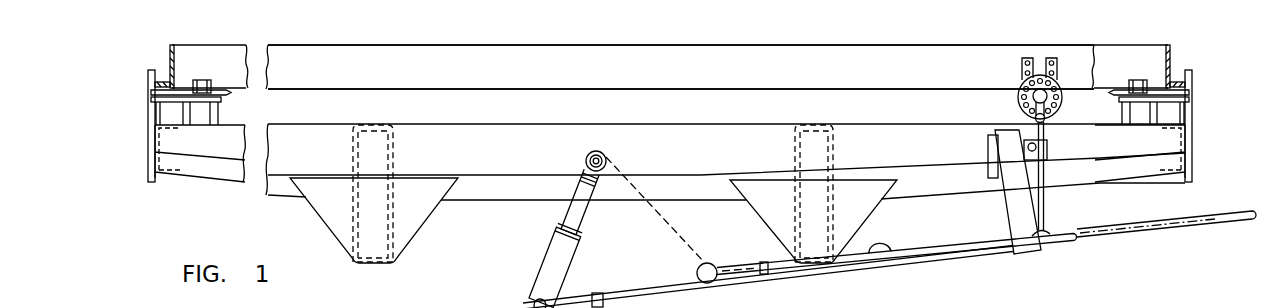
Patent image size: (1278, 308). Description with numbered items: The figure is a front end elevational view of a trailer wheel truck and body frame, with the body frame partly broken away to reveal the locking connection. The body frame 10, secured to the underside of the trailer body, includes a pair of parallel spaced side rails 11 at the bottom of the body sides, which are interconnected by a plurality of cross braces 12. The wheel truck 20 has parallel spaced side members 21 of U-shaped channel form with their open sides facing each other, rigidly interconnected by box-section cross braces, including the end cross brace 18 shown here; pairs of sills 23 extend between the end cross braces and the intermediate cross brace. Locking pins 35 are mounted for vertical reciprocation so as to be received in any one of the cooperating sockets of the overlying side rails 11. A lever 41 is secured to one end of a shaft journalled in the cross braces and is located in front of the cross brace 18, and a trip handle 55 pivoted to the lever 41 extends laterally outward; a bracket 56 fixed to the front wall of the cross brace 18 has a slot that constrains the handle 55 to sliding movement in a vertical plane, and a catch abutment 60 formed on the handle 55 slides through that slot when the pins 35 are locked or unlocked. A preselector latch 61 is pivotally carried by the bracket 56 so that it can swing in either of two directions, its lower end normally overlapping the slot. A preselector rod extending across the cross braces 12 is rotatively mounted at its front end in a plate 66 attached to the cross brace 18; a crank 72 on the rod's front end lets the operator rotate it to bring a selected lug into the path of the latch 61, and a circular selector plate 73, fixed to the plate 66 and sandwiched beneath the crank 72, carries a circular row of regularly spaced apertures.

The body frame 10 is at (555, 46).
The side rails 11 is at (168, 72).
The cross braces 12 is at (808, 68).
The cross brace 18 is at (713, 147).
The wheel truck 20 is at (582, 125).
The side members 21 is at (162, 142).
The sills 23 is at (353, 146).
The locking pin 35 is at (200, 80).
The lever 41 is at (543, 275).
The trip handle 55 is at (953, 262).
The bracket 56 is at (1002, 215).
The catch abutment 60 is at (877, 253).
The preselector latch 61 is at (1046, 203).
The plate 66 is at (1022, 70).
The crank 72 is at (1048, 100).
The selector plate 73 is at (1018, 100).